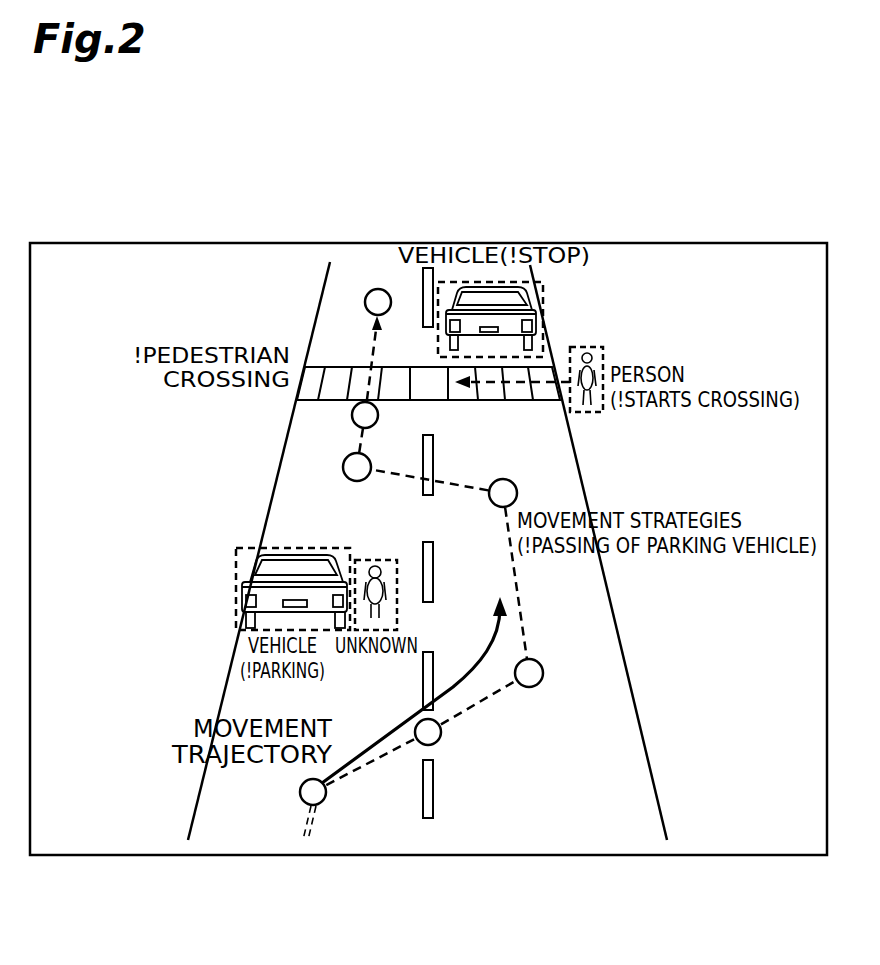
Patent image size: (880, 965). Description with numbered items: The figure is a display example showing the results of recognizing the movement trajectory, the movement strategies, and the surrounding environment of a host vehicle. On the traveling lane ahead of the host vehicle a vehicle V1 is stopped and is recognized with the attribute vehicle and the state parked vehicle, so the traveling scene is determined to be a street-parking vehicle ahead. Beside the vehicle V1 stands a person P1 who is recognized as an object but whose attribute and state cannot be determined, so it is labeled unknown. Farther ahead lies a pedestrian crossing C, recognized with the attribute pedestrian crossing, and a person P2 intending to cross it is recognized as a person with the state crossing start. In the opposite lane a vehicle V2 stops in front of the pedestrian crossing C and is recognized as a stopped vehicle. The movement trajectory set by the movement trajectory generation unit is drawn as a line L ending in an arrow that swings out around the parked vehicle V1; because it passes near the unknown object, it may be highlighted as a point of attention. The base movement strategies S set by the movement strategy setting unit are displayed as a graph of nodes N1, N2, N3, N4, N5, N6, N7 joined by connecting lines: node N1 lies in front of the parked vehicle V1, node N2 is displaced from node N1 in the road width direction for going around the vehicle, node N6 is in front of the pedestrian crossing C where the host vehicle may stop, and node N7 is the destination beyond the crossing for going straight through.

The node 1 N1 is at (326, 790).
The node 2 N2 is at (441, 733).
The node 3 N3 is at (543, 673).
The node 4 N4 is at (517, 493).
The node 5 N5 is at (343, 467).
The node 6 N6 is at (352, 415).
The node 7 N7 is at (365, 301).
The vehicle V1 is at (260, 546).
The vehicle V2 is at (543, 290).
The person P1 is at (372, 558).
The person P2 is at (598, 347).
The pedestrian crossing C is at (352, 367).
The movement strategies S is at (515, 568).
The movement trajectory L is at (375, 738).